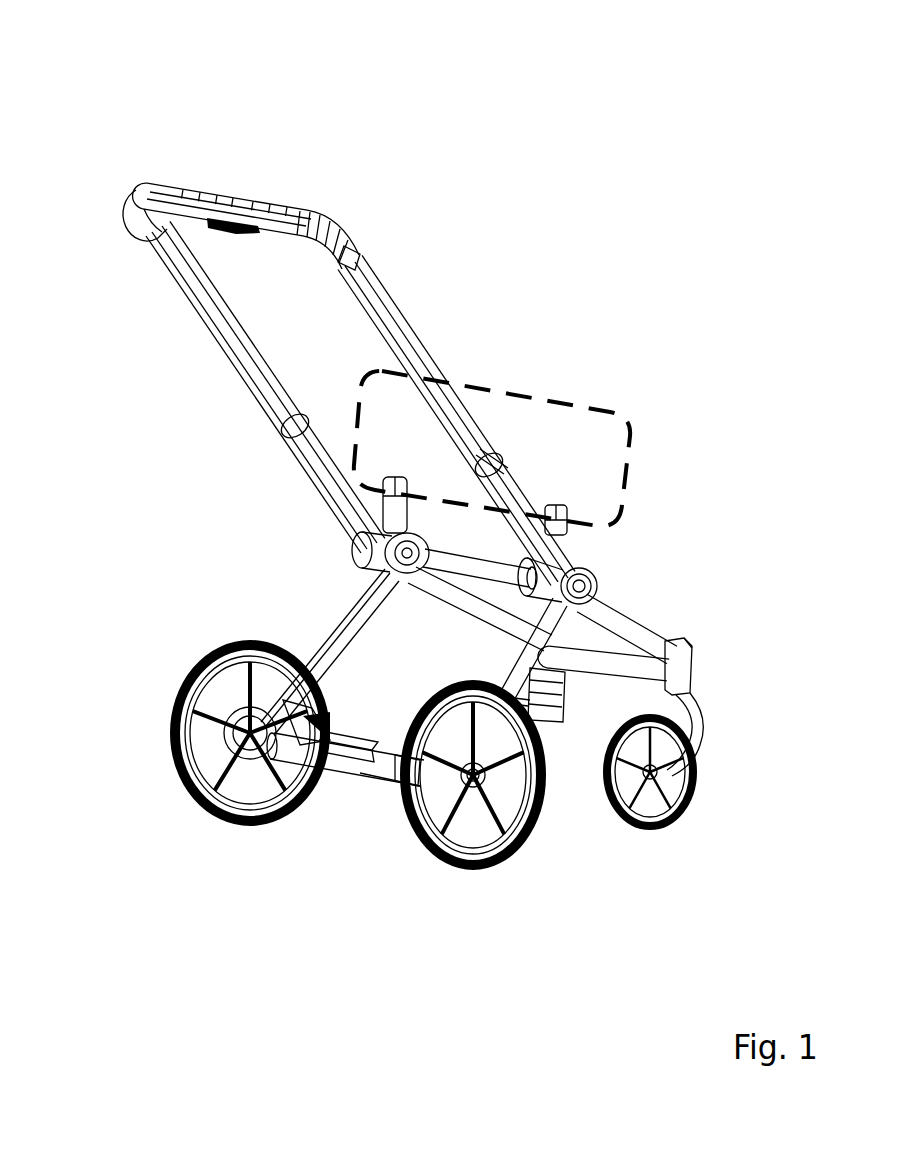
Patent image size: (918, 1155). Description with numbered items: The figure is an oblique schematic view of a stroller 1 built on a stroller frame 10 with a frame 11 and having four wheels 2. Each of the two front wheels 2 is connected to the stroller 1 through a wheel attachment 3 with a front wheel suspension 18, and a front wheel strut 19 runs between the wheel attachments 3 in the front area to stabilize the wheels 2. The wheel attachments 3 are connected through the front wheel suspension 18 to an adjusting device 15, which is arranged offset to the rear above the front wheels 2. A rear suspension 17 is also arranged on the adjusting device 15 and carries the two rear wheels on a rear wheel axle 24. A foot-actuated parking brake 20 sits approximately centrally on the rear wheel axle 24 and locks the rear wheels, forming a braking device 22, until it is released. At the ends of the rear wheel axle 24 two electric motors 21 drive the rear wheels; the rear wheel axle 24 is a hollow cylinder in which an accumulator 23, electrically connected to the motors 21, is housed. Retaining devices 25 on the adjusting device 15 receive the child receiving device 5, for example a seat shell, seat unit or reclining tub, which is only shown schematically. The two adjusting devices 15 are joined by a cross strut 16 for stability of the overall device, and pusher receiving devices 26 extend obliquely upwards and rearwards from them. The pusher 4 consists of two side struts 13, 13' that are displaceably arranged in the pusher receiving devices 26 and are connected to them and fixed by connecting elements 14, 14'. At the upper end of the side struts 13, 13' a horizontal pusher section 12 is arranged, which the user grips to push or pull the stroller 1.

The stroller 1 is at (612, 197).
The wheel 2 is at (722, 778).
The wheel attachment 3 is at (714, 662).
The pusher 4 is at (181, 183).
The child receiving device 5 is at (647, 430).
The stroller frame 10 is at (423, 275).
The frame 11 is at (466, 355).
The pusher section 12 is at (229, 178).
The side strut 13 is at (209, 362).
The side strut 13' is at (456, 306).
The connecting element 14 is at (292, 395).
The connecting element 14' is at (339, 138).
The adjusting device 15 is at (437, 533).
The cross strut 16 is at (444, 585).
The rear suspension 17 is at (318, 612).
The front wheel suspension 18 is at (644, 614).
The front wheel strut 19 is at (613, 692).
The parking brake 20 is at (336, 786).
The motor 21 is at (275, 800).
The braking device 22 is at (243, 788).
The accumulator 23 is at (375, 801).
The rear wheel axle 24 is at (313, 784).
The retaining devices 25 is at (424, 473).
The pusher receiving devices 26 is at (536, 491).